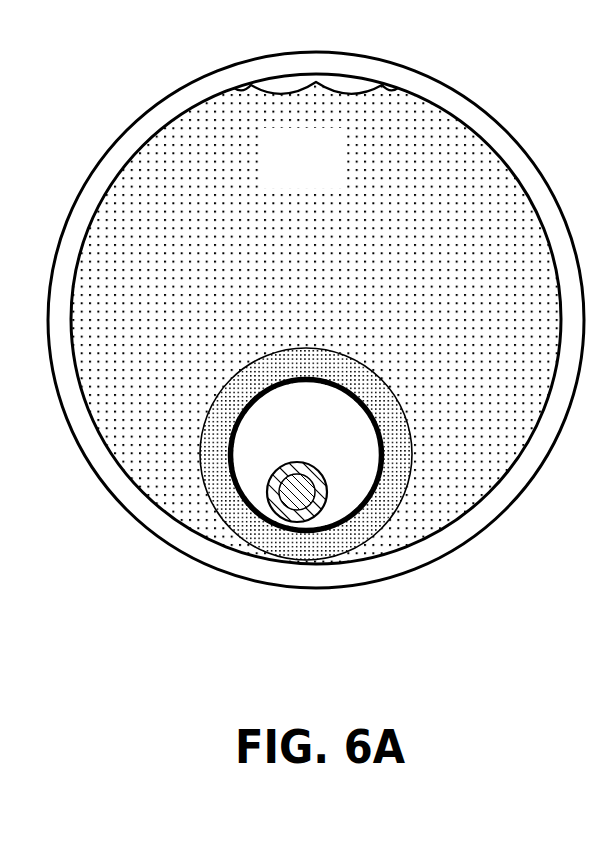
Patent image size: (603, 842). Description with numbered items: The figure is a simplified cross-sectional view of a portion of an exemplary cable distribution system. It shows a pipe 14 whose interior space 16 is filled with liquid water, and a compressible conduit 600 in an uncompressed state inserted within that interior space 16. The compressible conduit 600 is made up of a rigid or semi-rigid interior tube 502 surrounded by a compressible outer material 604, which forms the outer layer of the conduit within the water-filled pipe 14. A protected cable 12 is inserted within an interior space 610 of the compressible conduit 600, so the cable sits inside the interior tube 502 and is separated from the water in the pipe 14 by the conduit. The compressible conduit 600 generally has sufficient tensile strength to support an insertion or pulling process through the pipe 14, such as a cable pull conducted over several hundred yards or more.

The pipe 14 is at (140, 130).
The interior space 16 is at (496, 203).
The compressible conduit 600 is at (303, 328).
The compressible outer material 604 is at (257, 382).
The interior tube 502 is at (236, 426).
The interior space 610 is at (363, 434).
The protected cable 12 is at (298, 463).